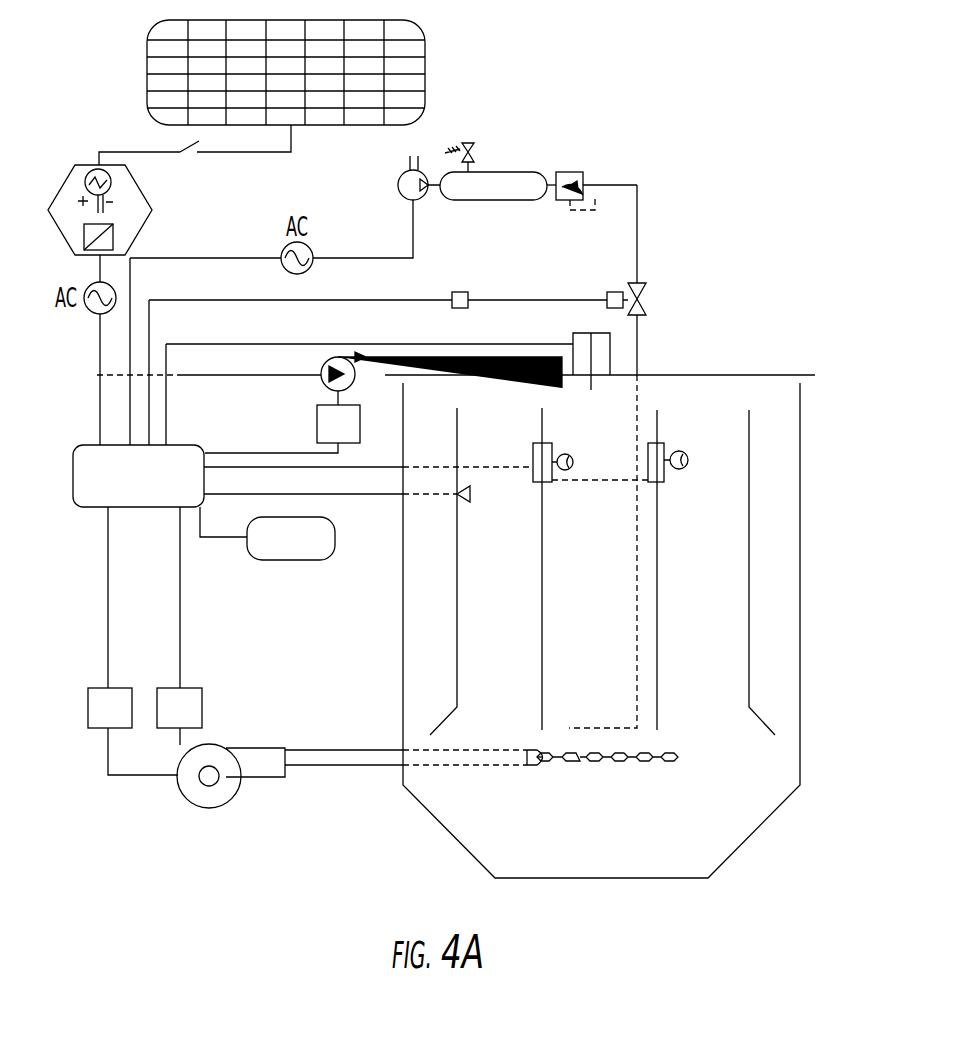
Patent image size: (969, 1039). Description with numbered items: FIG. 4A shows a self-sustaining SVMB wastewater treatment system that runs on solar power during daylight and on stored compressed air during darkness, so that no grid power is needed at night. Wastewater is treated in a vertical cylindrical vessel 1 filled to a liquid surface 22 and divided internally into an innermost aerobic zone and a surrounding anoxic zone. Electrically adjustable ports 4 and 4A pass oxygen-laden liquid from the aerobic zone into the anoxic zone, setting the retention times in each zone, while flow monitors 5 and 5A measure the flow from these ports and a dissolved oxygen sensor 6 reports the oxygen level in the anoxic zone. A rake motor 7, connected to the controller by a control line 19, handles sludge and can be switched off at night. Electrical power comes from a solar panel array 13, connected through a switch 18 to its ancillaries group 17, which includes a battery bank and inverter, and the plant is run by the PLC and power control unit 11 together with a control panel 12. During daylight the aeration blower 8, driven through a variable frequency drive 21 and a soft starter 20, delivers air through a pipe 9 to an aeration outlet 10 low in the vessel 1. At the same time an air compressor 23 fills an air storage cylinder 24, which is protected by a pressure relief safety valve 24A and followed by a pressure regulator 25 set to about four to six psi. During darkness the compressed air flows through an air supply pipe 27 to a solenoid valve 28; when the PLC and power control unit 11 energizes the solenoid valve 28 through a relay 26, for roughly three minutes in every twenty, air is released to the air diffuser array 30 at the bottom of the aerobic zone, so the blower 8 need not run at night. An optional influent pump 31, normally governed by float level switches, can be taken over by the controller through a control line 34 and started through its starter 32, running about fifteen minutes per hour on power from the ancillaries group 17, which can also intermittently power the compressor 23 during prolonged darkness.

The tank 1 is at (800, 452).
The electrically adjustable port 4 is at (664, 447).
The electrically adjustable port 4A is at (552, 447).
The flow monitor 5 is at (687, 465).
The flow monitor 5A is at (573, 462).
The dissolved oxygen sensor 6 is at (470, 498).
The rake motor 7 is at (609, 352).
The aeration blower 8 is at (240, 790).
The pipe 9 is at (308, 766).
The sparger 10 is at (557, 763).
The PLC and power control system 11 is at (88, 445).
The control panel 12 is at (276, 560).
The solar panel array 13 is at (147, 66).
The solar panel array ancillaries group 17 is at (60, 188).
The switch 18 is at (178, 156).
The control line 19 is at (276, 343).
The soft starter 20 is at (160, 688).
The variable frequency drive 21 is at (92, 688).
The liquid surface 22 is at (697, 375).
The air compressor 23 is at (414, 157).
The air storage cylinder 24 is at (514, 172).
The pressure relief safety valve 24A is at (470, 143).
The pressure regulator 25 is at (584, 178).
The relay 26 is at (460, 292).
The air supply pipe 27 is at (638, 230).
The solenoid valve 28 is at (646, 296).
The air diffuser array 30 is at (578, 727).
The influent pump 31 is at (350, 386).
The soft starter 32 is at (317, 424).
The control line 34 is at (96, 374).